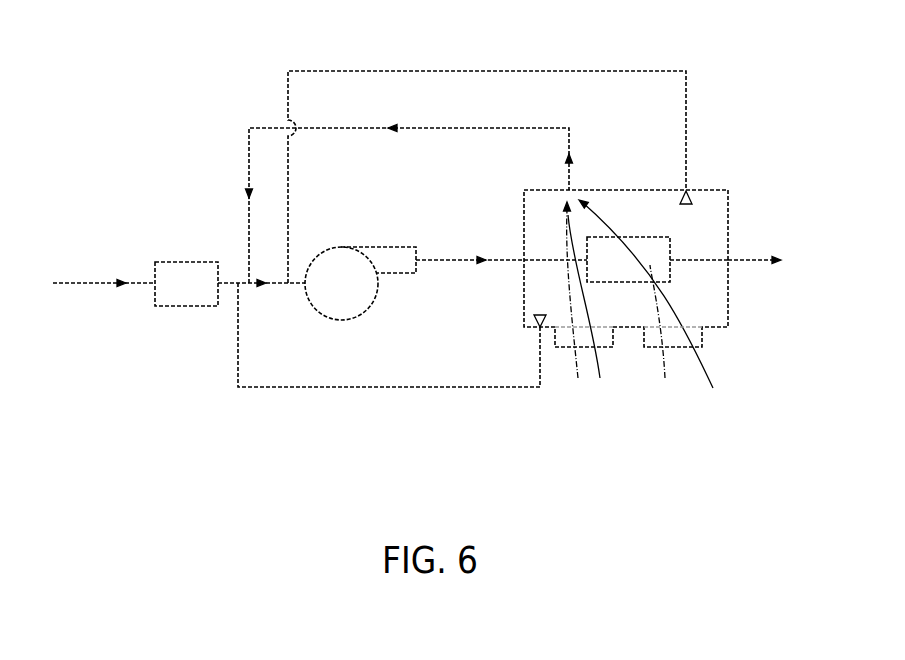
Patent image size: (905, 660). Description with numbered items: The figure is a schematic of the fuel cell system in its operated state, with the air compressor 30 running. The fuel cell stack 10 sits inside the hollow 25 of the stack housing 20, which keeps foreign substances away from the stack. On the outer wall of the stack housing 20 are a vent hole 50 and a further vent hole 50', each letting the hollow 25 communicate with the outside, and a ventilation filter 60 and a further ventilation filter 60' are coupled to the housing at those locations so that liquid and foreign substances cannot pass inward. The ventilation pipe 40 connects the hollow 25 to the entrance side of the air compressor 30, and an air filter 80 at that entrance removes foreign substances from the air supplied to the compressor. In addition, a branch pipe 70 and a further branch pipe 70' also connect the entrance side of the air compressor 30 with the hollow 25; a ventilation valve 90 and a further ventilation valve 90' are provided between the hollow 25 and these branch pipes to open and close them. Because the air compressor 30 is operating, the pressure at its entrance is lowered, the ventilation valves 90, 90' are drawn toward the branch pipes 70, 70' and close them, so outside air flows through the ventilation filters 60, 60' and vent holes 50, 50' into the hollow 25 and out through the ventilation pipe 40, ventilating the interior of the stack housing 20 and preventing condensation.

The fuel cell stack 10 is at (670, 248).
The stack housing 20 is at (718, 190).
The hollow 25 is at (697, 217).
The air compressor 30 is at (343, 318).
The ventilation pipe 40 is at (326, 128).
The vent hole 50 is at (670, 295).
The vent hole 50' is at (560, 319).
The ventilation filter 60 is at (672, 369).
The ventilation filter 60' is at (591, 369).
The branch pipe 70 is at (389, 367).
The branch pipe 70' is at (487, 151).
The air filter 80 is at (189, 304).
The ventilation valve 90 is at (512, 313).
The ventilation valve 90' is at (656, 165).